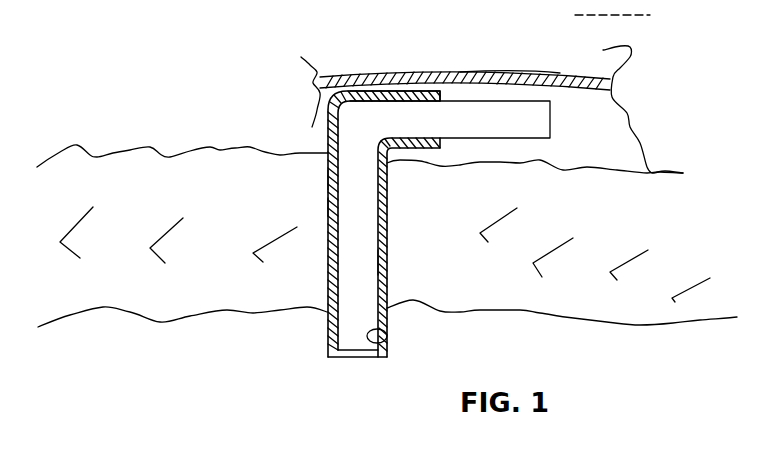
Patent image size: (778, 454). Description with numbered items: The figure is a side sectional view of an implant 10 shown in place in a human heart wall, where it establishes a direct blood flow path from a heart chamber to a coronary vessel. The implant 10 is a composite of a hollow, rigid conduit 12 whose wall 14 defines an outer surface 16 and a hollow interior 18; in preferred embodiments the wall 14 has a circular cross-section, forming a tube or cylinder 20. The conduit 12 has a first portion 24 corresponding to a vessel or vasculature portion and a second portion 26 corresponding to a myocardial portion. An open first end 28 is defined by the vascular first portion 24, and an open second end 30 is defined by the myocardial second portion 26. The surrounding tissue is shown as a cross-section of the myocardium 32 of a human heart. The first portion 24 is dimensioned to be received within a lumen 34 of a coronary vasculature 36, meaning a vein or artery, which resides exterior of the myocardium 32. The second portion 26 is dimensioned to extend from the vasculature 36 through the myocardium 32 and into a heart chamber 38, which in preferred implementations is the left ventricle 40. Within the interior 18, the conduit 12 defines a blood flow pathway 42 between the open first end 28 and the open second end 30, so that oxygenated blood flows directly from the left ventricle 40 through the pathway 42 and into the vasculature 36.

The implant 10 is at (255, 92).
The conduit 12 is at (327, 267).
The wall 14 is at (388, 227).
The outer surface 16 is at (390, 263).
The hollow interior 18 is at (378, 291).
The tube or cylinder 20 is at (327, 180).
The first portion 24 is at (428, 89).
The second portion 26 is at (327, 207).
The open first end 28 is at (550, 133).
The open second end 30 is at (343, 358).
The myocardium 32 is at (155, 132).
The lumen 34 is at (584, 87).
The coronary vasculature 36 is at (507, 73).
The heart chamber 38 is at (543, 318).
The left ventricle 40 is at (587, 322).
The blood flow pathway 42 is at (380, 340).